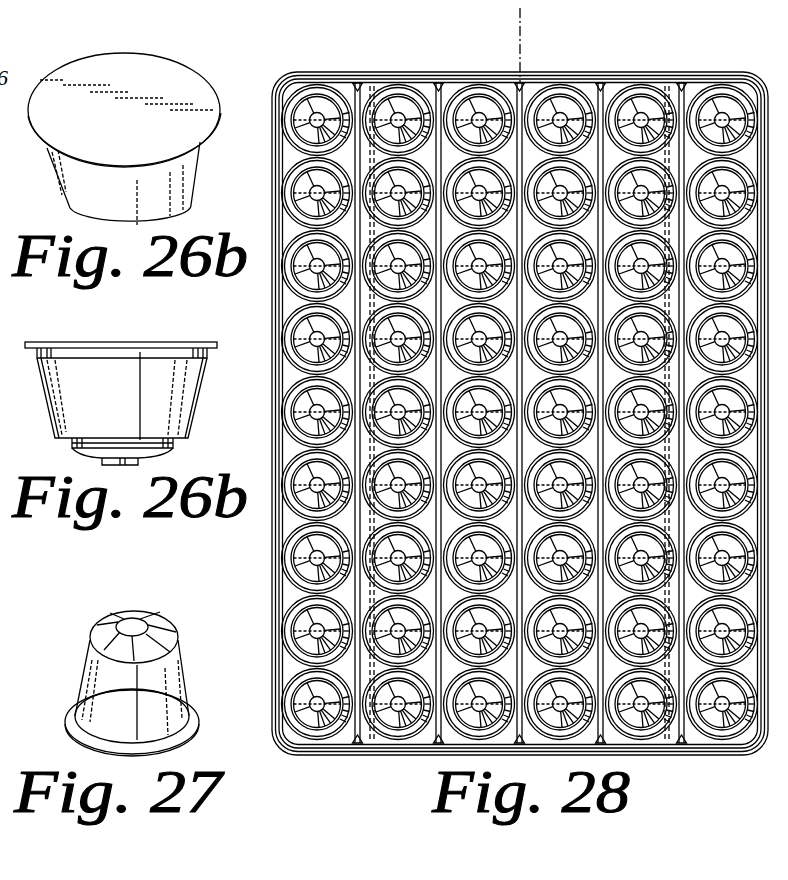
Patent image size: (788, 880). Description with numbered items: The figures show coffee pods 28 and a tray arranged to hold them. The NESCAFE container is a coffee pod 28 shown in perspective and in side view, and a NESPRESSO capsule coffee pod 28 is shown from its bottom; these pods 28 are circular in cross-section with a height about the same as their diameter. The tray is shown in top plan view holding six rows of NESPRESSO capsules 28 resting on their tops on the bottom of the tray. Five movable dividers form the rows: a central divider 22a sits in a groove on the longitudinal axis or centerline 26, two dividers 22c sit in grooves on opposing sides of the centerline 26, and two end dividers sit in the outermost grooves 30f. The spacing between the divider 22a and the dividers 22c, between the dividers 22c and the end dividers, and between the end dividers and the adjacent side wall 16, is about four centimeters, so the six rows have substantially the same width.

In FIG. 28, the sidewall 16 is at (272, 132).
In FIG. 28, the divider 22a is at (498, 80).
In FIG. 28, the dividers 22c is at (415, 80).
In FIG. 28, the longitudinal axis 26 is at (523, 32).
In FIG. 26B, the coffee pod 28 is at (95, 65).
In FIG. 27, the coffee pod 28 is at (100, 640).
In FIG. 28, the coffee pod 28 is at (305, 560).
In FIG. 28, the grooves 30f is at (346, 84).